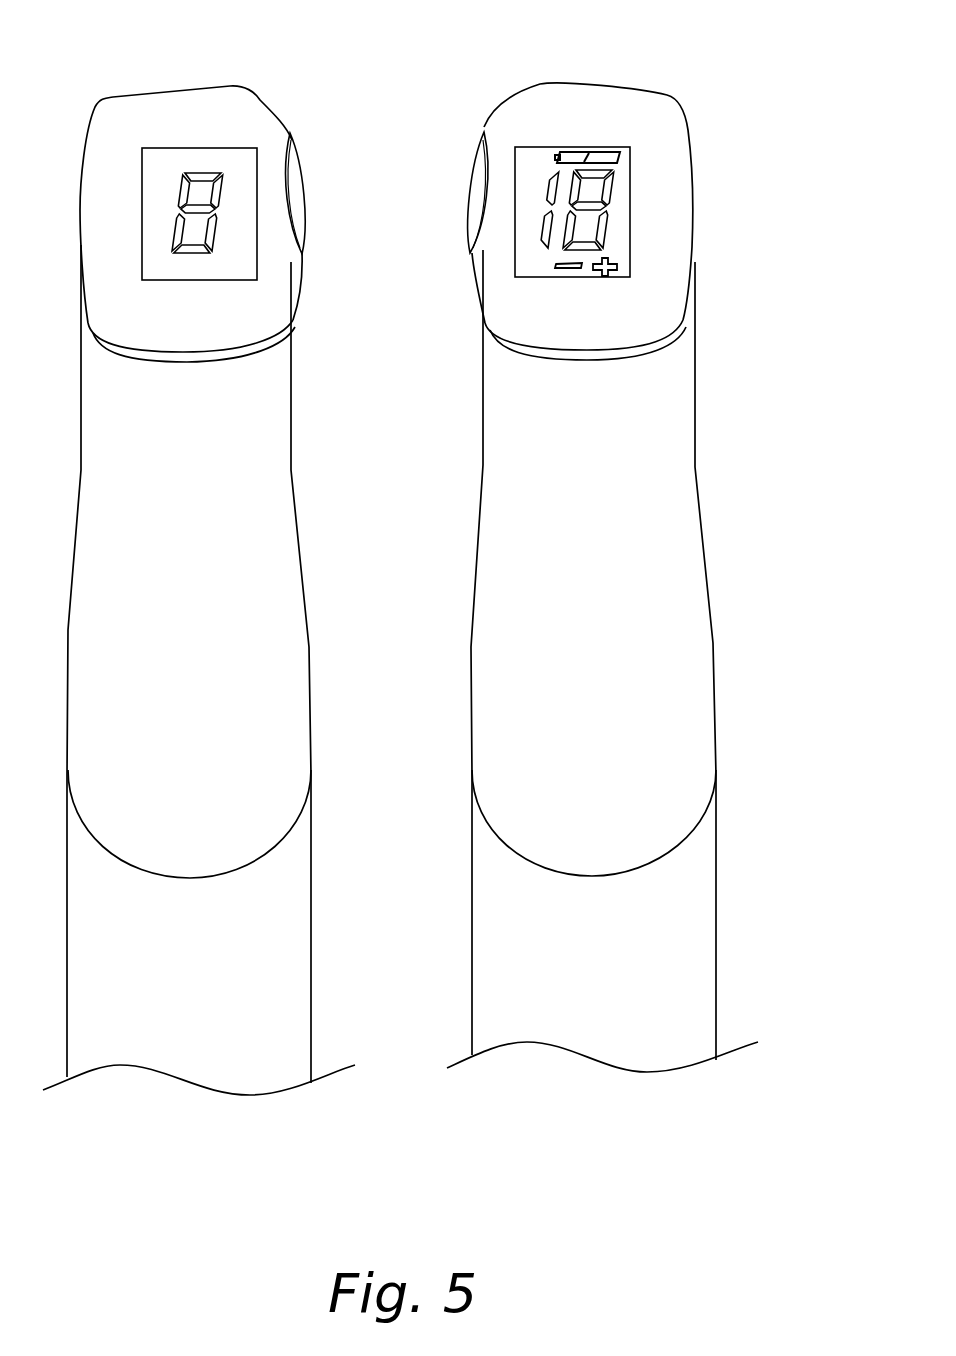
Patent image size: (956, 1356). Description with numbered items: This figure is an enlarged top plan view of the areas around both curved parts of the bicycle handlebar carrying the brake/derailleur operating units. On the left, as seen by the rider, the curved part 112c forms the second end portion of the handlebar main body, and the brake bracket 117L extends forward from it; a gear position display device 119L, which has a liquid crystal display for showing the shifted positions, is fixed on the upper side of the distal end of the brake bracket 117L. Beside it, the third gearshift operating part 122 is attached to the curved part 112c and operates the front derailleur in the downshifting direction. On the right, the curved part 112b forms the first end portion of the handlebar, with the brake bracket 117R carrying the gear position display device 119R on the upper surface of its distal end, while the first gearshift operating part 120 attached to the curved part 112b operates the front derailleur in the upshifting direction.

The gear position display device 119L is at (253, 113).
The gear position display device 119R is at (648, 107).
The third gearshift operating part 122 is at (303, 182).
The first gearshift operating part 120 is at (466, 191).
The brake bracket 117L is at (272, 442).
The brake bracket 117R is at (667, 437).
The curved part 112c is at (293, 885).
The curved part 112b is at (700, 878).